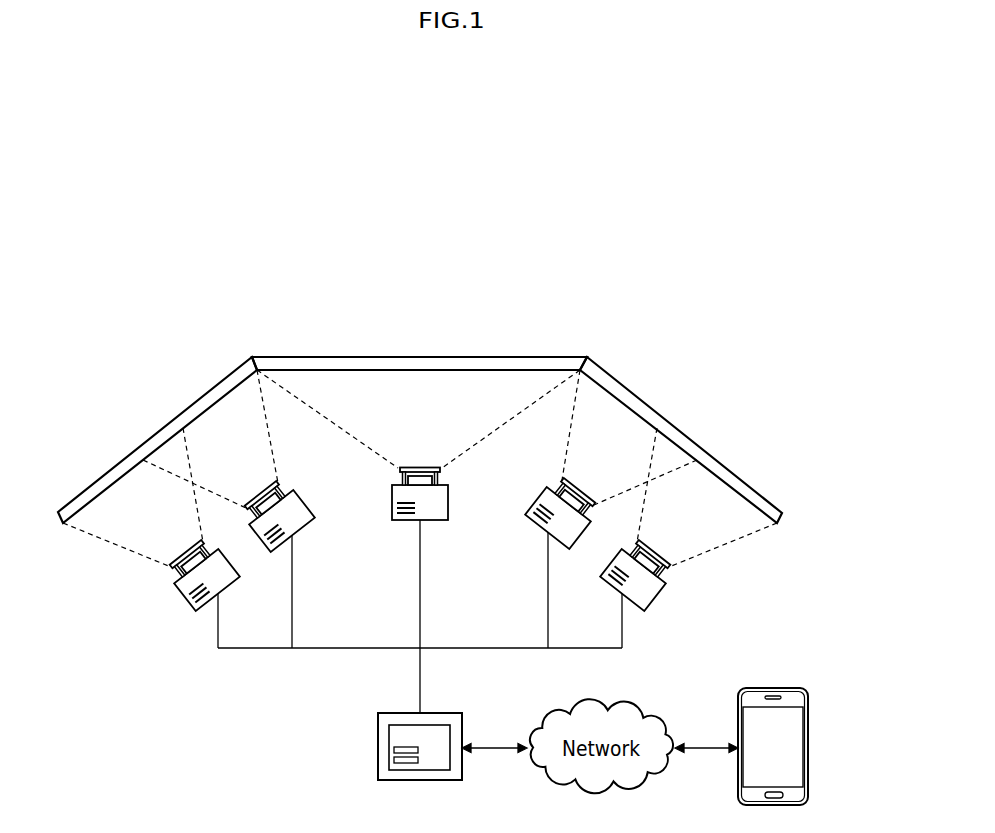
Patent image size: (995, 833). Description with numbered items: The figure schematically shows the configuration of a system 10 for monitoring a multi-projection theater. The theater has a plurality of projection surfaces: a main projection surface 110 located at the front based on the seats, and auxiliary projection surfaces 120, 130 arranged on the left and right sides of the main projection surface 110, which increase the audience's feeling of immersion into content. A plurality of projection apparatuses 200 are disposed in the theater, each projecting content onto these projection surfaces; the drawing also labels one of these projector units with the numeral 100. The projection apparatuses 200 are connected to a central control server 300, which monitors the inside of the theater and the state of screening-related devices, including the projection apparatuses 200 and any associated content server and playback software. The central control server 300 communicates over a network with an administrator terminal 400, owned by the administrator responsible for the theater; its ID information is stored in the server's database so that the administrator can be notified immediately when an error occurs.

The system for monitoring a multi-projection theater 10 is at (477, 244).
The main projection surface 110 is at (423, 357).
The auxiliary projection surface 120 is at (157, 433).
The auxiliary projection surface 130 is at (688, 433).
The projector 100 is at (654, 599).
The projection apparatus 200 is at (672, 568).
The central control server 300 is at (378, 749).
The administrator terminal 400 is at (810, 749).